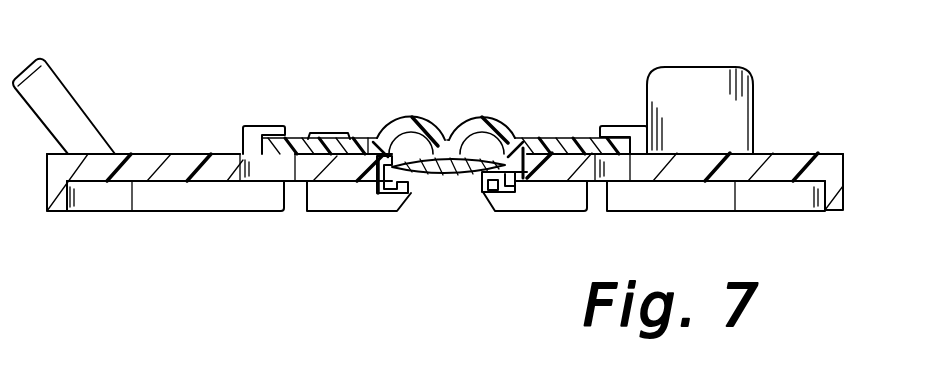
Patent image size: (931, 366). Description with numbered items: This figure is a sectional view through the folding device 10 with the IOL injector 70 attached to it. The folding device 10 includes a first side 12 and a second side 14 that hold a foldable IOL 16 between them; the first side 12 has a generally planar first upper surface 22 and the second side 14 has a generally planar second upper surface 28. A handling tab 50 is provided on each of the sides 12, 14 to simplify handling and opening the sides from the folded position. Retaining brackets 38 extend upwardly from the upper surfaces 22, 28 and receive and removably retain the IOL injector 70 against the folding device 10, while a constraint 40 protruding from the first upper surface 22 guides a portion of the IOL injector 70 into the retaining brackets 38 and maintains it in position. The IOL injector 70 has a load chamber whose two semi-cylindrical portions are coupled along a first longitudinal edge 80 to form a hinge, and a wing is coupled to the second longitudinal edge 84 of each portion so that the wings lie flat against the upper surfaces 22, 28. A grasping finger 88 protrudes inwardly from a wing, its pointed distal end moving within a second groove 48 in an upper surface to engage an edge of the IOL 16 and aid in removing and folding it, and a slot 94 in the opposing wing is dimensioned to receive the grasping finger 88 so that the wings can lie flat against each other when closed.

The folding device 10 is at (200, 118).
The first side 12 is at (47, 184).
The second side 14 is at (843, 188).
The foldable IOL 16 is at (440, 170).
The first upper surface 22 is at (158, 154).
The second upper surface 28 is at (797, 153).
The retaining bracket 38 is at (262, 125).
The constraint 40 is at (330, 133).
The second groove 48 is at (524, 180).
The handling tab 50 is at (65, 88).
The IOL injector 70 is at (552, 115).
The first longitudinal edge 80 is at (450, 150).
The second longitudinal edge 84 is at (378, 140).
The grasping finger 88 is at (477, 170).
The slot 94 is at (382, 168).